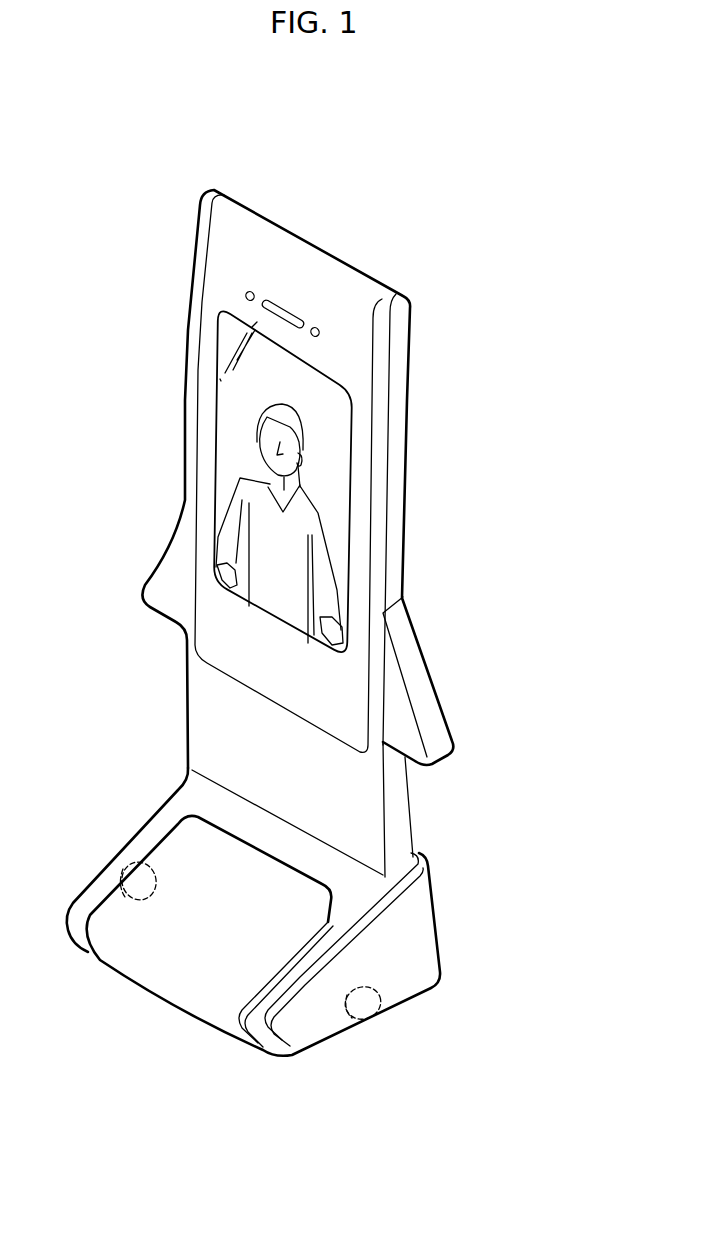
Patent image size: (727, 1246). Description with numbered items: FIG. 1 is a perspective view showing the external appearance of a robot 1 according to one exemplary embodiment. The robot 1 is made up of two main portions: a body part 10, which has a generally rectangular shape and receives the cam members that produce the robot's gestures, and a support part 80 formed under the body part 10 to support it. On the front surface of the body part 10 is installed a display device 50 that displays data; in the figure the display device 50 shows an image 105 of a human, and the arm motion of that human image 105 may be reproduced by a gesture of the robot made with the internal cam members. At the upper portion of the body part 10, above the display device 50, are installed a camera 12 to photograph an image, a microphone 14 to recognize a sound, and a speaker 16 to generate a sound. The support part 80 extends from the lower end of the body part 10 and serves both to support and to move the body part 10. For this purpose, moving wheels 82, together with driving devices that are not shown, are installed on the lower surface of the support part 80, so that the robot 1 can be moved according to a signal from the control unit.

The robot 1 is at (58, 121).
The body part 10 is at (177, 425).
The camera 12 is at (283, 316).
The microphone 14 is at (316, 328).
The speaker 16 is at (249, 291).
The display device 50 is at (305, 341).
The image 105 is at (313, 520).
The support part 80 is at (456, 958).
The moving wheels 82 is at (373, 1007).